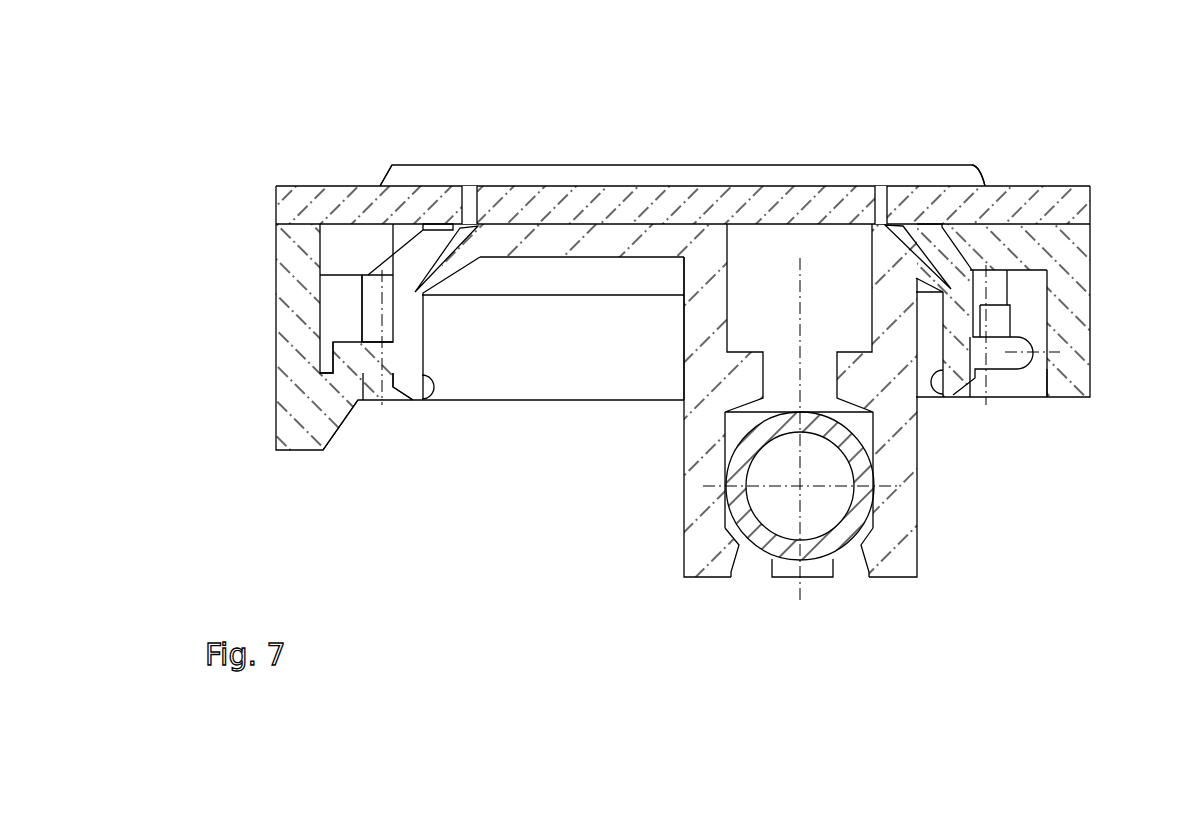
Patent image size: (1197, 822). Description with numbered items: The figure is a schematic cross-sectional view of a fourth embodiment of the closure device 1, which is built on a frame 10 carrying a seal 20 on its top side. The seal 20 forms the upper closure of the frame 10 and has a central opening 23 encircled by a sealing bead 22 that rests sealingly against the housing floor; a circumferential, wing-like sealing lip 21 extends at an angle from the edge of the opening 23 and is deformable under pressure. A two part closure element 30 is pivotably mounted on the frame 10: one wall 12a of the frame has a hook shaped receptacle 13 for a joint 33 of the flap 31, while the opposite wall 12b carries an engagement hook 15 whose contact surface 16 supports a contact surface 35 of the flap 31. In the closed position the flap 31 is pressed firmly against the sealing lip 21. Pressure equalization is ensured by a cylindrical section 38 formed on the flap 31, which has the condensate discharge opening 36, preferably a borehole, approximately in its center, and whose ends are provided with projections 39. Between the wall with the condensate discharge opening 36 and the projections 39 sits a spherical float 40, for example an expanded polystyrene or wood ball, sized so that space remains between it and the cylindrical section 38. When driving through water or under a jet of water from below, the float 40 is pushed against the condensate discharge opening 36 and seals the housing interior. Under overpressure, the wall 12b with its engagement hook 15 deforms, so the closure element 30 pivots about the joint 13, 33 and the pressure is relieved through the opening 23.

The closure device 1 is at (1055, 100).
The frame 10 is at (1074, 253).
The wall of the frame 12a is at (1074, 333).
The opposite wall of the frame 12b is at (297, 292).
The hook shaped receptacle 13 is at (1023, 384).
The engagement hook 15 is at (322, 418).
The contact surface 16 is at (333, 374).
The seal 20 is at (1073, 206).
The sealing lip 21 is at (460, 230).
The sealing bead 22 is at (387, 176).
The opening of the seal 23 is at (479, 222).
The closure element 30 is at (676, 486).
The flap 31 is at (611, 237).
The joint 33 is at (1000, 358).
The contact surface 35 is at (363, 362).
The condensate discharge opening 36 is at (766, 380).
The cylindrical section 38 is at (900, 470).
The projections 39 is at (726, 548).
The float 40 is at (767, 541).